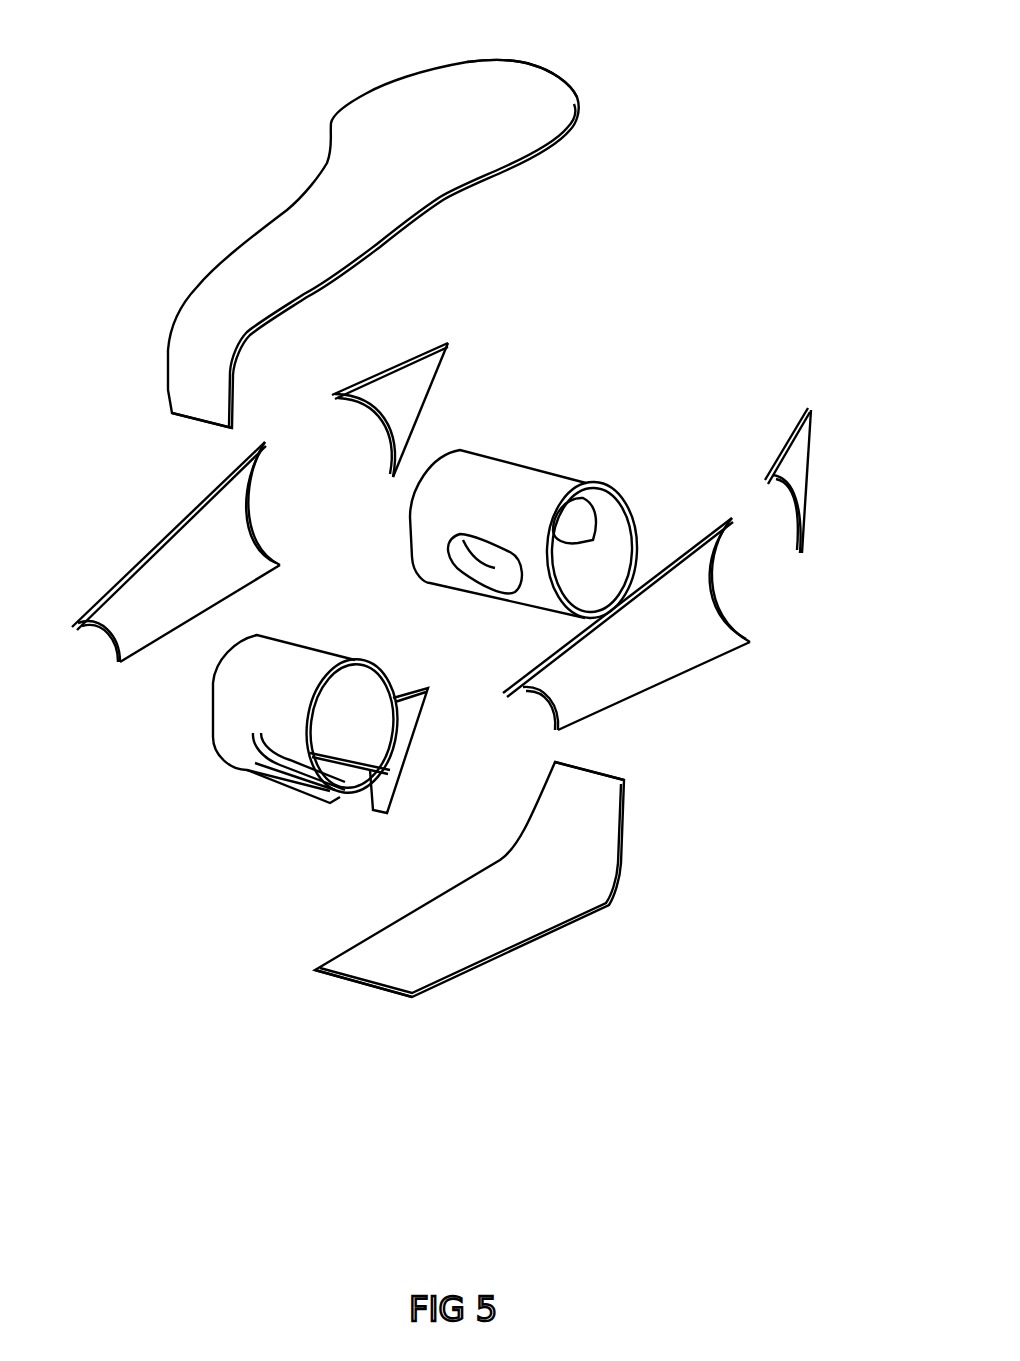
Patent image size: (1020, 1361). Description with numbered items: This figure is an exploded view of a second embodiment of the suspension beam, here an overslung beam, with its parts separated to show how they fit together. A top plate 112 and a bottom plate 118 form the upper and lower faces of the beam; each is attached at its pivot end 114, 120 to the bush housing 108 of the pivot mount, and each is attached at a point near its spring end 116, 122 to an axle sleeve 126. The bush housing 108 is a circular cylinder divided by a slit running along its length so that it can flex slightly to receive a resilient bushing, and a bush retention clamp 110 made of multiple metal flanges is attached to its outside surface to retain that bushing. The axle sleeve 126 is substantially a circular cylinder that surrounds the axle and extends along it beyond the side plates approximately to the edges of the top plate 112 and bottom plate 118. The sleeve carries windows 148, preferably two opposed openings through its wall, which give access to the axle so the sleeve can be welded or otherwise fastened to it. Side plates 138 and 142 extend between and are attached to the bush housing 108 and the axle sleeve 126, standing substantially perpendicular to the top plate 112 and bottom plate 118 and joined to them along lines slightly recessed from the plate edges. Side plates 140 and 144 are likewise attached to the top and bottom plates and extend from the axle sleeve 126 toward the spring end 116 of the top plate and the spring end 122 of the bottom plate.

The bush housing 108 is at (218, 765).
The bush retention clamp 110 is at (350, 803).
The top plate 112 is at (353, 212).
The pivot end 114 is at (168, 390).
The spring end 116 is at (545, 67).
The bottom plate 118 is at (507, 957).
The pivot end 120 is at (360, 988).
The spring end 122 is at (590, 770).
The axle sleeve 126 is at (533, 467).
The side plate 138 is at (680, 677).
The side plate 140 is at (810, 488).
The side plate 142 is at (133, 567).
The side plate 144 is at (453, 345).
The window 148 is at (493, 590).